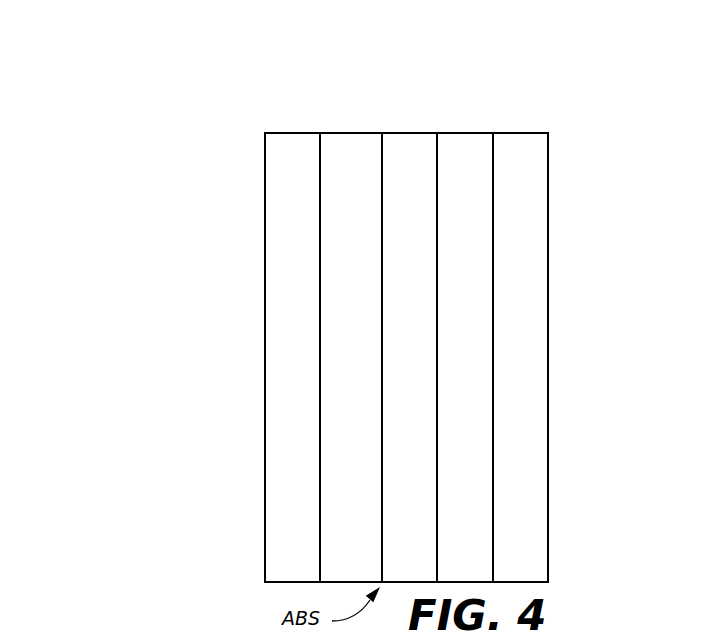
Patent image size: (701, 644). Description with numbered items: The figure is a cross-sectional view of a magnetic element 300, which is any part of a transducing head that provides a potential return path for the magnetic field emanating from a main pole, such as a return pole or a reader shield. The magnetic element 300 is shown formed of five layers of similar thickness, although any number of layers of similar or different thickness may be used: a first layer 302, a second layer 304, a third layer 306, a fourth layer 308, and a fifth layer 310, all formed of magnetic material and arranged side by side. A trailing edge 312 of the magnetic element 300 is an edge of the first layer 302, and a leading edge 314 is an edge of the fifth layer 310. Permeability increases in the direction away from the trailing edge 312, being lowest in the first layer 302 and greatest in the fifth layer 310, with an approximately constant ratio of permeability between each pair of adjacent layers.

The magnetic element 300 is at (128, 146).
The first layer 302 is at (285, 133).
The second layer 304 is at (360, 133).
The third layer 306 is at (410, 133).
The fourth layer 308 is at (462, 133).
The fifth layer 310 is at (522, 133).
The trailing edge 312 is at (252, 330).
The leading edge 314 is at (562, 329).